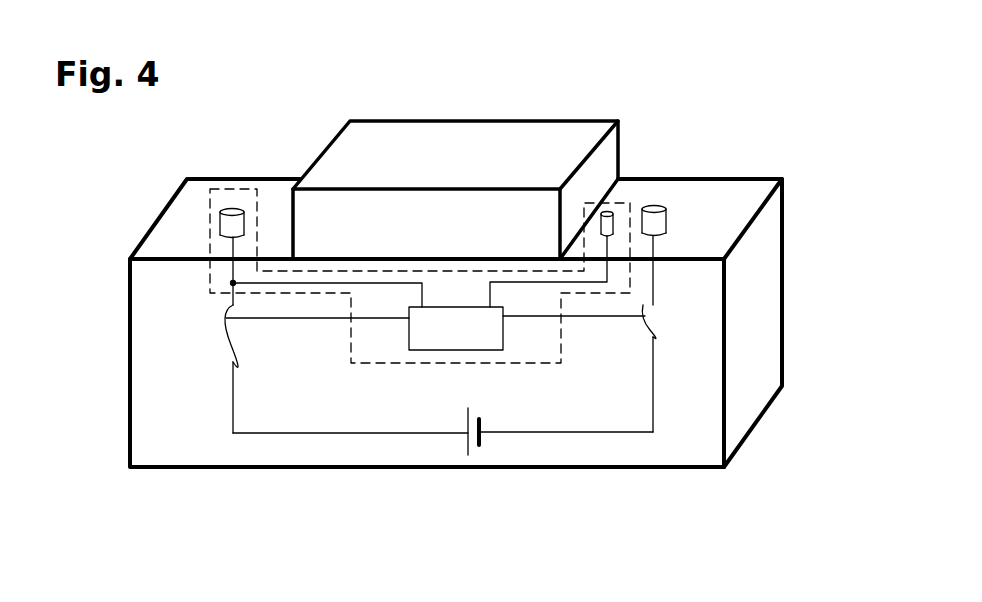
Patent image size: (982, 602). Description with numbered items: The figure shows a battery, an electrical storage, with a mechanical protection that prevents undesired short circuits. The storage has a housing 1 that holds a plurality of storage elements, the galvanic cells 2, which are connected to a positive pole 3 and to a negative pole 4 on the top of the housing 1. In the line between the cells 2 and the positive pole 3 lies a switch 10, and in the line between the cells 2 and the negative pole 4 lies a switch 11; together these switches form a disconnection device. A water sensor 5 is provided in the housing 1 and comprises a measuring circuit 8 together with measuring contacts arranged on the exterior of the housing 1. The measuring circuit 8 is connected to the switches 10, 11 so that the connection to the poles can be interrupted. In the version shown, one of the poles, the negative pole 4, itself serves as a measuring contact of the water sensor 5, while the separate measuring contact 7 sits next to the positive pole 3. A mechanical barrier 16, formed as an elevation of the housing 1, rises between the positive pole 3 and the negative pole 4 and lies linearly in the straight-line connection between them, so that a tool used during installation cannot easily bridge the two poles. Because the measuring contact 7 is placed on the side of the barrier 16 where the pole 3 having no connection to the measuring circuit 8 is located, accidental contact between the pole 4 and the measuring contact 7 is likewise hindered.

The housing 1 is at (236, 467).
The cells 2 is at (478, 455).
The positive pole 3 is at (667, 210).
The negative pole 4 is at (243, 210).
The water sensor 5 is at (538, 363).
The measuring contact 7 is at (613, 213).
The measuring circuit 8 is at (456, 328).
The switch 10 is at (650, 327).
The switch 11 is at (226, 318).
The mechanical barrier 16 is at (443, 177).